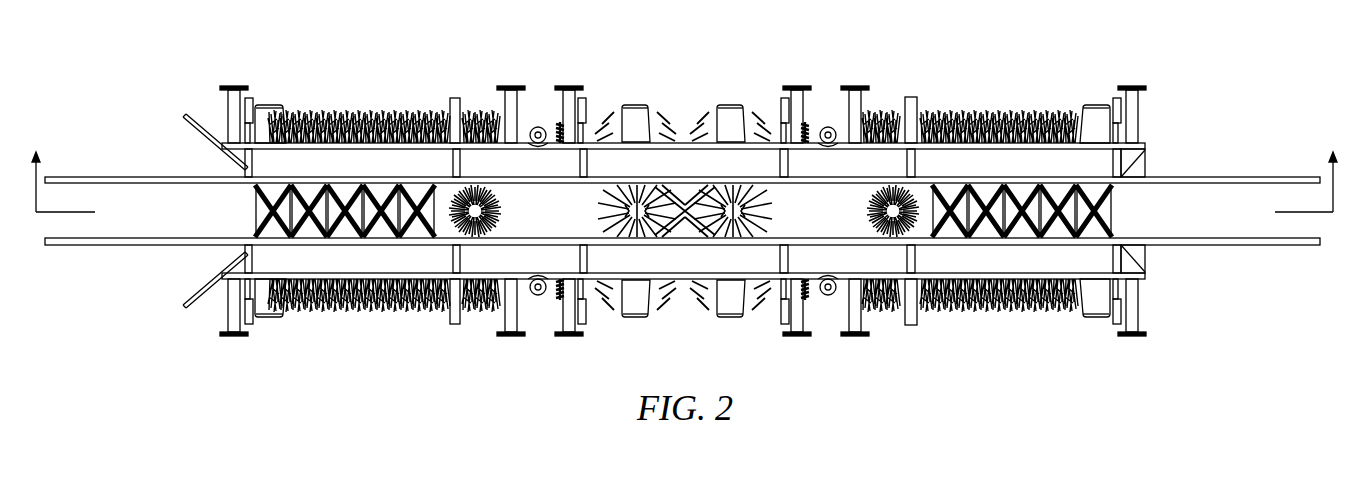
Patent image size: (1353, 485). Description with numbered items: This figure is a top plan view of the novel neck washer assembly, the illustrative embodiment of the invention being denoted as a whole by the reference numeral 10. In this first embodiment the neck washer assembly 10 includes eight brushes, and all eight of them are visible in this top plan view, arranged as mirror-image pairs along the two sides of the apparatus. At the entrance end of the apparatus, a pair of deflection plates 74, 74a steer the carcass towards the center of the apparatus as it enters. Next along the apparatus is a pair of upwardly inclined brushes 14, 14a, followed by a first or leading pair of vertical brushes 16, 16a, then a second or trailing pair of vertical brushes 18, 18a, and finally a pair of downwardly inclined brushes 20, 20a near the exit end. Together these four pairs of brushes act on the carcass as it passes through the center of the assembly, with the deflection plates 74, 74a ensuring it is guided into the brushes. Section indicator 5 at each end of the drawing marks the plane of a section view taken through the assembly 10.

The neck washer assembly 10 is at (873, 53).
The upwardly inclined brush 14 is at (380, 305).
The upwardly inclined brush 14a is at (372, 100).
The first or leading vertical brush 16 is at (655, 318).
The first or leading vertical brush 16a is at (662, 122).
The second or trailing vertical brush 18 is at (717, 318).
The second or trailing vertical brush 18a is at (705, 122).
The downwardly inclined brush 20 is at (1015, 322).
The downwardly inclined brush 20a is at (1015, 115).
The deflection plate 74 is at (203, 273).
The deflection plate 74a is at (195, 138).
The section line 5- 5 is at (684, 173).